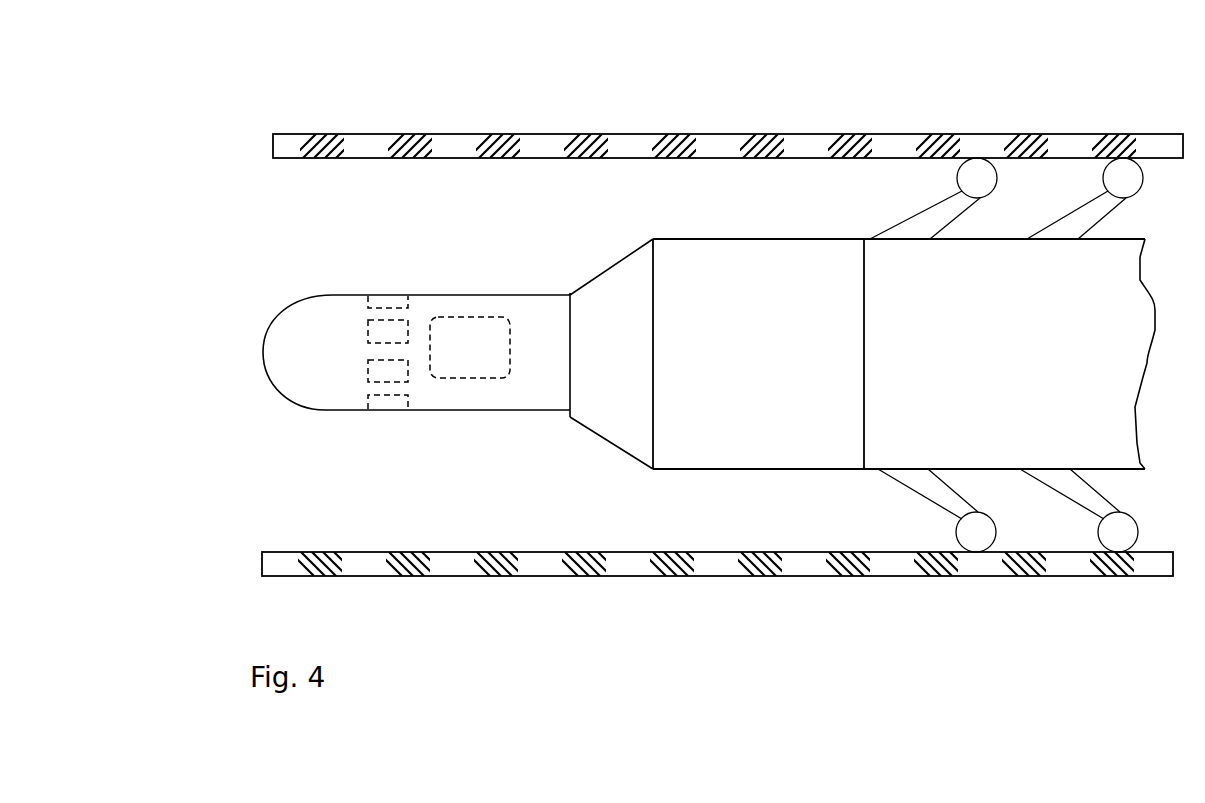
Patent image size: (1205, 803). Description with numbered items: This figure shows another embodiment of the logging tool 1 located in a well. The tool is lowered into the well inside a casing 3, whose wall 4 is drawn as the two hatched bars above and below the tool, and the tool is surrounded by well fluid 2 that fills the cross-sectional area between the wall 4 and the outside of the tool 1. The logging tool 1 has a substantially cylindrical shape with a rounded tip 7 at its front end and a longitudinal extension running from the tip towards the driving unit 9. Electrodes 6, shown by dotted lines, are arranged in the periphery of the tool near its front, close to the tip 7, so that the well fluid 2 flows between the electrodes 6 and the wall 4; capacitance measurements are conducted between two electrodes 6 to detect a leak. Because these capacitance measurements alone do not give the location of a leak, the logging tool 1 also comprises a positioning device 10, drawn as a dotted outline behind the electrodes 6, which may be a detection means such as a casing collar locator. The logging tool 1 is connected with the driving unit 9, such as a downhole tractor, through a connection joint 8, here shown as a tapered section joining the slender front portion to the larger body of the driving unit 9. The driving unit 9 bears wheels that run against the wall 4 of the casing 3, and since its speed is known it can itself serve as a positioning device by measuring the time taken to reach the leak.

The logging tool 1 is at (410, 205).
The well fluid 2 is at (717, 382).
The casing 3 is at (1099, 142).
The wall 4 is at (976, 143).
The electrodes 6 is at (398, 367).
The tip 7 is at (263, 358).
The connection joint 8 is at (568, 380).
The driving unit 9 is at (1002, 430).
The positioning device 10 is at (462, 358).